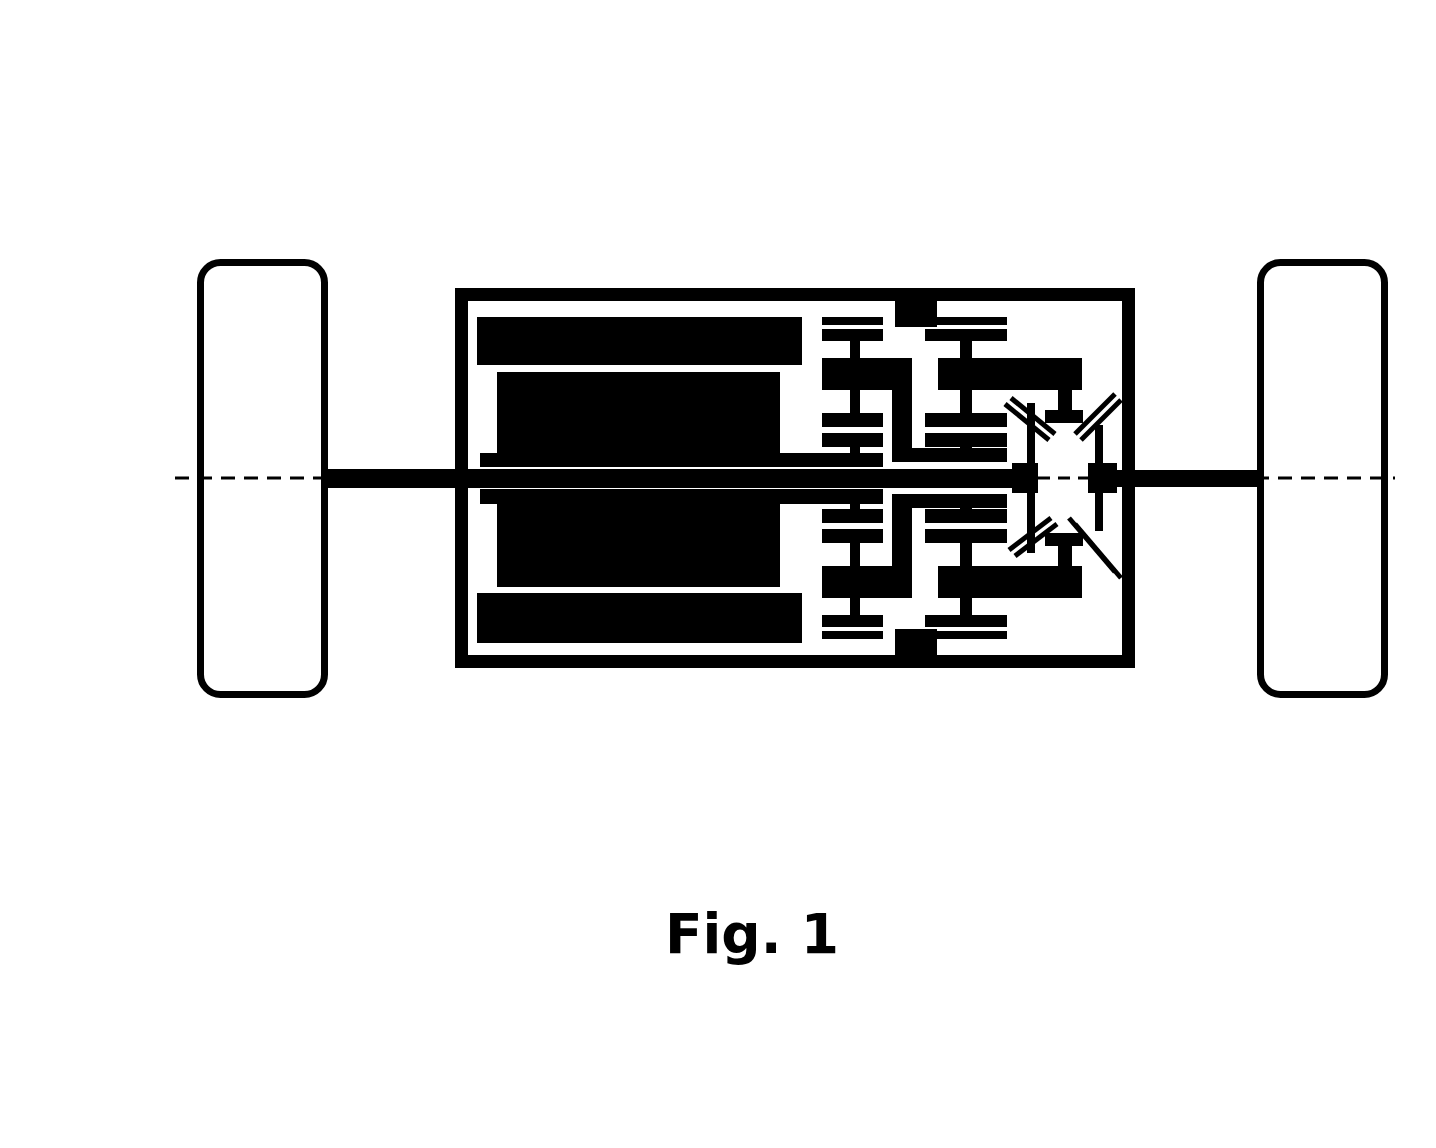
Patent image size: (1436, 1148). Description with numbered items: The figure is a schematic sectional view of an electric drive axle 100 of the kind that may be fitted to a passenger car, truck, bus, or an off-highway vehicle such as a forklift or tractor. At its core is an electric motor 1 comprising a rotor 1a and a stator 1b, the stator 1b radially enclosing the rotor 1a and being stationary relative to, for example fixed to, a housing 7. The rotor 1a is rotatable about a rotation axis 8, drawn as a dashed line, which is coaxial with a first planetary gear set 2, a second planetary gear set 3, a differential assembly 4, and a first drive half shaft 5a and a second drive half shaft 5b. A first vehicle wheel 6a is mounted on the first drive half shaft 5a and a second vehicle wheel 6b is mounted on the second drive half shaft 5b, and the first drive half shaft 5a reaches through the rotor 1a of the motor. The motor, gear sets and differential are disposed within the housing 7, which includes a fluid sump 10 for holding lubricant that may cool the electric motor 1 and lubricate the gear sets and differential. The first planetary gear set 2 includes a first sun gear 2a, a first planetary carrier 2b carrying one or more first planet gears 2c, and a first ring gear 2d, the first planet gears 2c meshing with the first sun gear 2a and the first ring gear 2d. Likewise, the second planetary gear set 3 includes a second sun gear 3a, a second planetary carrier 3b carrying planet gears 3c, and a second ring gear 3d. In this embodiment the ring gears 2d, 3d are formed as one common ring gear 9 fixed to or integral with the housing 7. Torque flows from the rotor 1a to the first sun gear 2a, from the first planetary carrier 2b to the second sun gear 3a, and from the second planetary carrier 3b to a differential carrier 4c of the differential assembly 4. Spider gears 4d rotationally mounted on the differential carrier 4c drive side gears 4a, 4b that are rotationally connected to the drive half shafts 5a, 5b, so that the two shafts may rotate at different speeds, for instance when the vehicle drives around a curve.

The electric drive axle 100 is at (443, 123).
The electric motor 1 is at (451, 413).
The rotor 1a is at (495, 540).
The stator 1b is at (476, 312).
The first planetary gear set 2 is at (838, 284).
The first sun gear 2a is at (818, 435).
The first planetary carrier 2b is at (906, 355).
The first planet gears 2c is at (818, 325).
The first ring gear 2d is at (862, 313).
The second planetary gear set 3 is at (970, 284).
The second sun gear 3a is at (1008, 430).
The second planetary carrier 3b is at (1010, 603).
The second planet gears 3c is at (1010, 326).
The second ring gear 3d is at (996, 308).
The differential assembly 4 is at (1118, 578).
The side gear 4a is at (1037, 450).
The side gear 4b is at (1108, 422).
The differential carrier 4c is at (1062, 608).
The spider gears 4d is at (1114, 390).
The first drive half shaft 5a is at (380, 492).
The second drive half shaft 5b is at (1198, 492).
The first vehicle wheel 6a is at (268, 252).
The second vehicle wheel 6b is at (1323, 252).
The housing 7 is at (1114, 672).
The rotation axis 8 is at (280, 466).
The common ring gear 9 is at (812, 642).
The fluid sump 10 is at (503, 650).